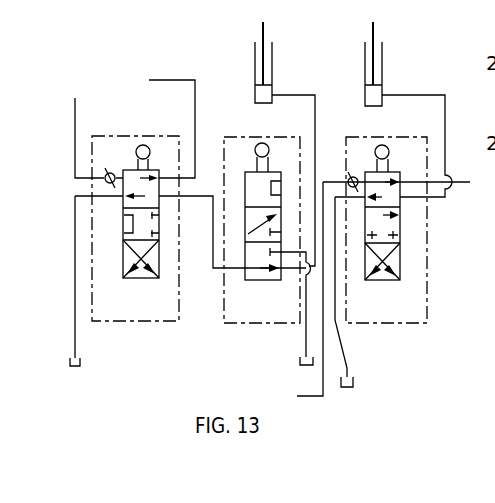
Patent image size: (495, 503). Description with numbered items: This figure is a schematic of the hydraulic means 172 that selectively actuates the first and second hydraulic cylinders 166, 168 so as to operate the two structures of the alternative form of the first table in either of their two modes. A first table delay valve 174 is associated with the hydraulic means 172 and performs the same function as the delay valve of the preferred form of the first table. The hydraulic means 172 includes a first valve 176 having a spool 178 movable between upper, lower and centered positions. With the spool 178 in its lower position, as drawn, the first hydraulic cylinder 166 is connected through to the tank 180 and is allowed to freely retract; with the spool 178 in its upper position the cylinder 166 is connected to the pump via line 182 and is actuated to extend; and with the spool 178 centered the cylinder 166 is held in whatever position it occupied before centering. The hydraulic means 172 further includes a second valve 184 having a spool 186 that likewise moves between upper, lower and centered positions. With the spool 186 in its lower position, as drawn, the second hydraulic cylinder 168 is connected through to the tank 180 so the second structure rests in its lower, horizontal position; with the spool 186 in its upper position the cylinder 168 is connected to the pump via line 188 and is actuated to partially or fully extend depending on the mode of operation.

The first hydraulic cylinder 166 is at (383, 67).
The second hydraulic cylinder 168 is at (272, 68).
The hydraulic means 172 is at (160, 59).
The first table delay valve 174 is at (272, 137).
The first valve 176 is at (427, 298).
The spool 178 is at (398, 267).
The tank 180 is at (80, 362).
The line 182 is at (321, 378).
The second valve 184 is at (123, 322).
The spool 186 is at (143, 280).
The line 188 is at (75, 118).